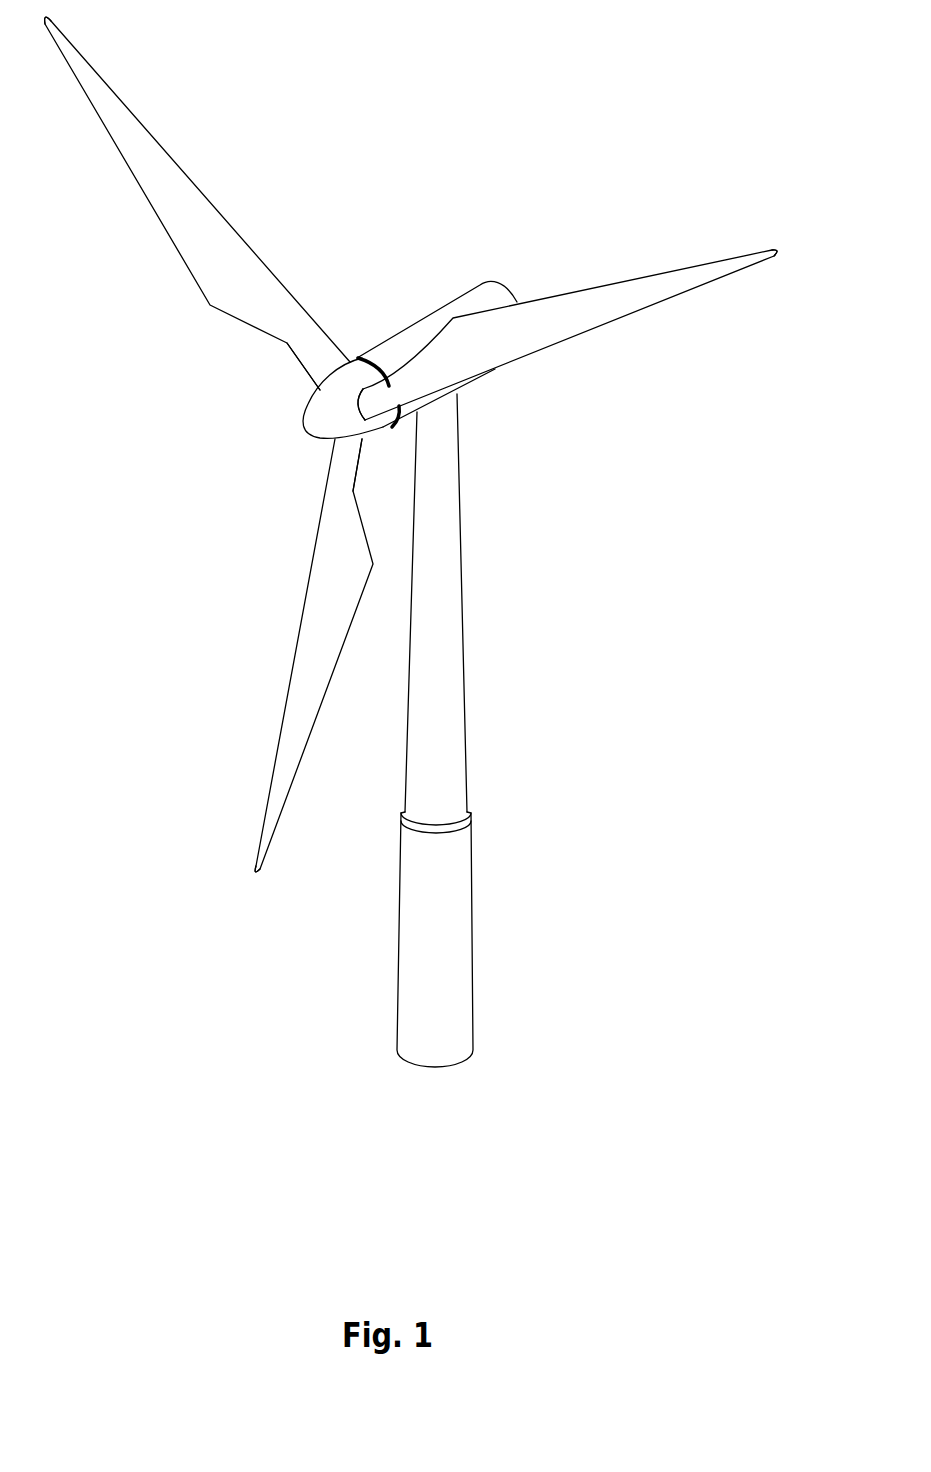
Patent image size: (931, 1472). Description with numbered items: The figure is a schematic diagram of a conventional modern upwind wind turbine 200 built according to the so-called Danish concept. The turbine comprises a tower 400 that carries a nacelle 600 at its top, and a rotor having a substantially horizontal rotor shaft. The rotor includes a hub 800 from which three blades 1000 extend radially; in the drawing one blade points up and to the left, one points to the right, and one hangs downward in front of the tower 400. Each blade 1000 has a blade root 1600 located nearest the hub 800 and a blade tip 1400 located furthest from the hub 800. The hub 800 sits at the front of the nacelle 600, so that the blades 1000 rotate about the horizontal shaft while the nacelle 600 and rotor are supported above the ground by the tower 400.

The wind turbine 200 is at (515, 750).
The tower 400 is at (453, 603).
The nacelle 600 is at (405, 340).
The hub 800 is at (320, 415).
The blade 1000 is at (223, 283).
The blade tip 1400 is at (85, 70).
The blade root 1600 is at (328, 375).